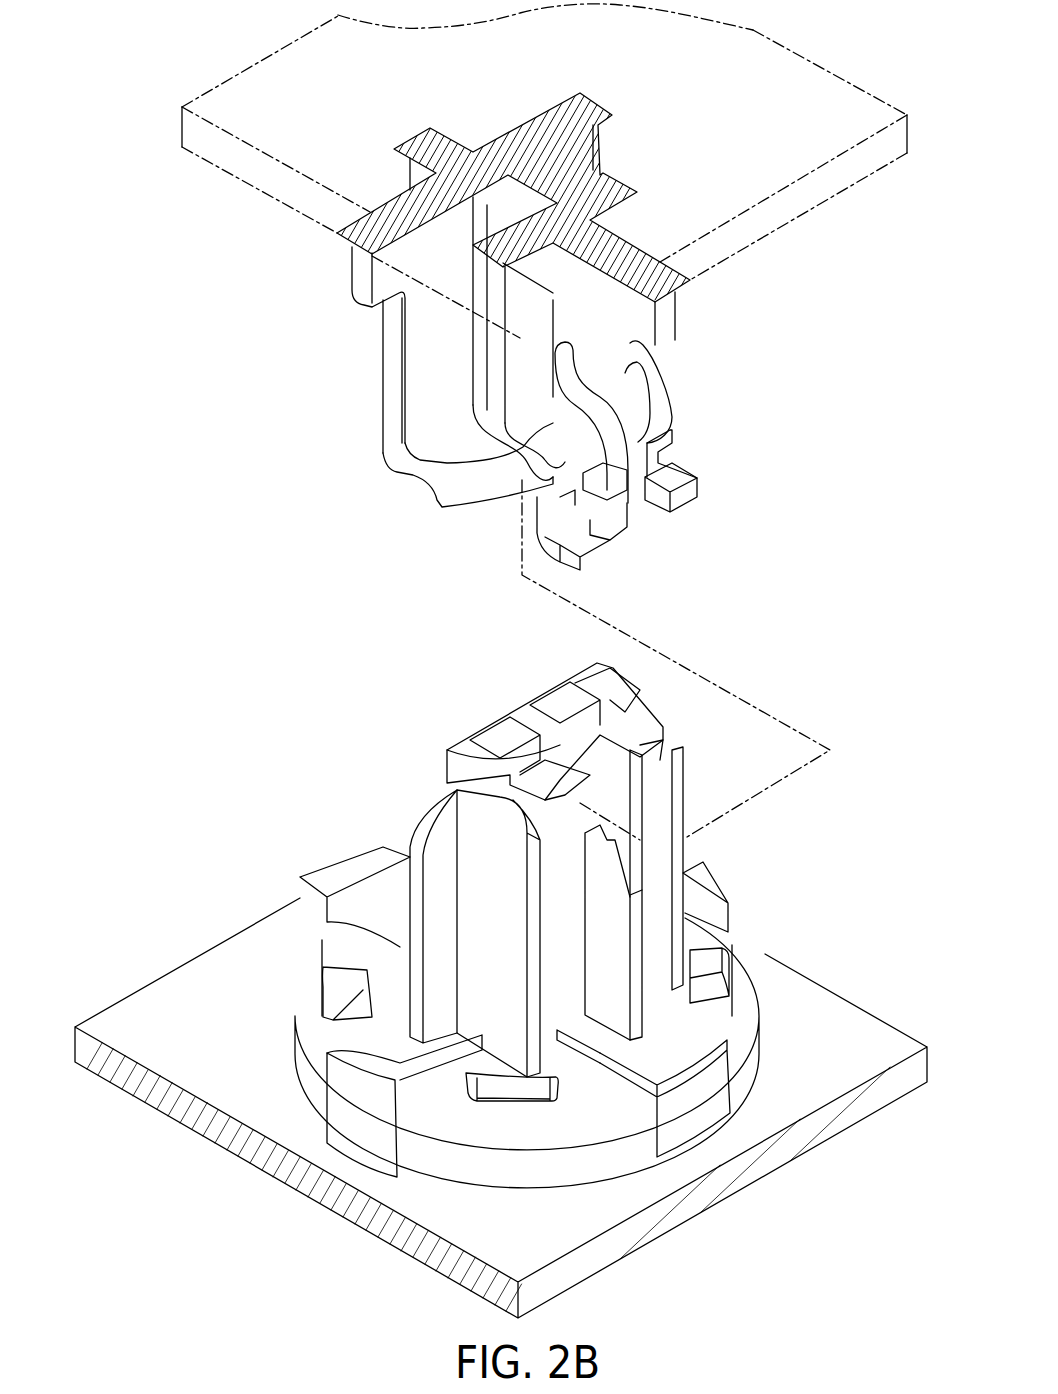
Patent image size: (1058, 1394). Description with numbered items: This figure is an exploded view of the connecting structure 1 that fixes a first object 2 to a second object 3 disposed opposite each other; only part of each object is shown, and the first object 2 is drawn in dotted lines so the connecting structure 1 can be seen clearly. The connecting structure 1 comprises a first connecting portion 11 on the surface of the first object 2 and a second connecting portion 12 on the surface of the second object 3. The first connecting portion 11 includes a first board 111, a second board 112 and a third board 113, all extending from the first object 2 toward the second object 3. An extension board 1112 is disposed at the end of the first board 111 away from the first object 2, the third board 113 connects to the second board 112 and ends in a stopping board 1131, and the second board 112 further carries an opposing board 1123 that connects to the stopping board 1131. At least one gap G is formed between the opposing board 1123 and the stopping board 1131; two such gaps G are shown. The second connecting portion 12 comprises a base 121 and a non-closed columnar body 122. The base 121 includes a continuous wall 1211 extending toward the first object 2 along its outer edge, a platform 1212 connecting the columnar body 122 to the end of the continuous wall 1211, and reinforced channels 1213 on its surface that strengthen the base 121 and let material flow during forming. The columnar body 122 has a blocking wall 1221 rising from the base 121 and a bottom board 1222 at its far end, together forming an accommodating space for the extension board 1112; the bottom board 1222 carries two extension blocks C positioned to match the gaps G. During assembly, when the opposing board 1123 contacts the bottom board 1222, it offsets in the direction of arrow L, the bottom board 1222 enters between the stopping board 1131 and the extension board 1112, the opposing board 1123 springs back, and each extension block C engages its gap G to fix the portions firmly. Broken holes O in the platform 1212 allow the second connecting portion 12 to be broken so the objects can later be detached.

The connecting structure 1 is at (238, 296).
The first object 2 is at (793, 220).
The second object 3 is at (793, 1153).
The first connecting portion 11 is at (285, 300).
The second connecting portion 12 is at (420, 740).
The first board 111 is at (457, 390).
The second board 112 is at (538, 435).
The third board 113 is at (529, 350).
The extension board 1112 is at (450, 478).
The opposing board 1123 is at (660, 495).
The stopping board 1131 is at (653, 402).
The base 121 is at (607, 1017).
The non-closed columnar body 122 is at (238, 800).
The continuous wall 1211 is at (747, 1078).
The platform 1212 is at (738, 1018).
The reinforced channel 1213 is at (697, 892).
The blocking wall 1221 is at (570, 917).
The bottom board 1222 is at (483, 772).
The extension block C is at (560, 780).
The gap G is at (565, 497).
The arrow L is at (642, 543).
The broken hole O is at (513, 1085).